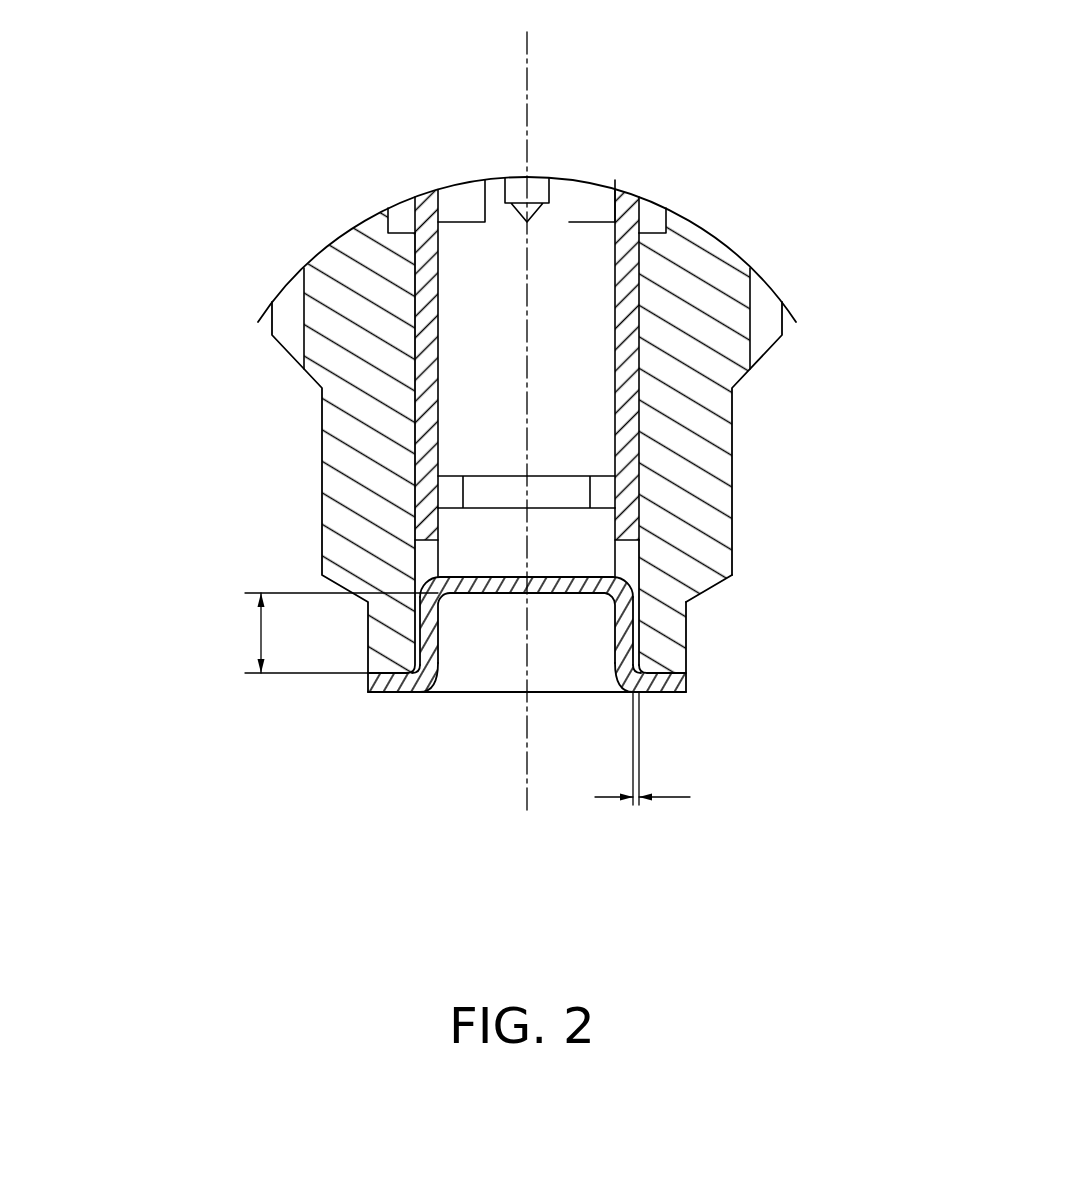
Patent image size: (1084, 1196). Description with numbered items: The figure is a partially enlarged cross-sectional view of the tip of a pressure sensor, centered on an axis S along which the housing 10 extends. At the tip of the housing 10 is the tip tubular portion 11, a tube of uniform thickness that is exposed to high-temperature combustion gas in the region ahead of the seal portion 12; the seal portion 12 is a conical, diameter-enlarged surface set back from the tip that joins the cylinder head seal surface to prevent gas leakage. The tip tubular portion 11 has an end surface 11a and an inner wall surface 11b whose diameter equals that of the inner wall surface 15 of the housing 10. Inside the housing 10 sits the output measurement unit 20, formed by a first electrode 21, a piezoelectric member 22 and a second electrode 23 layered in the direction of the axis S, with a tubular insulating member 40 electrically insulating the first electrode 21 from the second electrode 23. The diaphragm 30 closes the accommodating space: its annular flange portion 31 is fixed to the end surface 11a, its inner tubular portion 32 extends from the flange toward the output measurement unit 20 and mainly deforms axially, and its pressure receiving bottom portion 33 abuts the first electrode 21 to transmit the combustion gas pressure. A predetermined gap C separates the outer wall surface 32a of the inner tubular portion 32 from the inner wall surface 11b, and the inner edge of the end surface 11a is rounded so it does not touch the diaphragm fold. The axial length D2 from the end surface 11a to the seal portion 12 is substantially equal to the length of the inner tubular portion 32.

The axis S is at (527, 92).
The housing 10 is at (737, 451).
The tip tubular portion 11 is at (677, 657).
The end surface 11a is at (682, 693).
The inner wall surface 11b is at (638, 612).
The seal portion 12 is at (700, 600).
The inner wall surface 15 is at (640, 407).
The output measurement unit 20 is at (355, 377).
The first electrode 21 is at (468, 527).
The piezoelectric member 22 is at (490, 496).
The second electrode 23 is at (478, 388).
The diaphragm 30 is at (617, 731).
The annular flange portion 31 is at (383, 692).
The inner tubular portion 32 is at (422, 686).
The outer wall surface 32a is at (635, 638).
The pressure receiving bottom portion 33 is at (438, 641).
The tubular insulating member 40 is at (629, 280).
The length D2 is at (327, 633).
The gap C is at (642, 748).